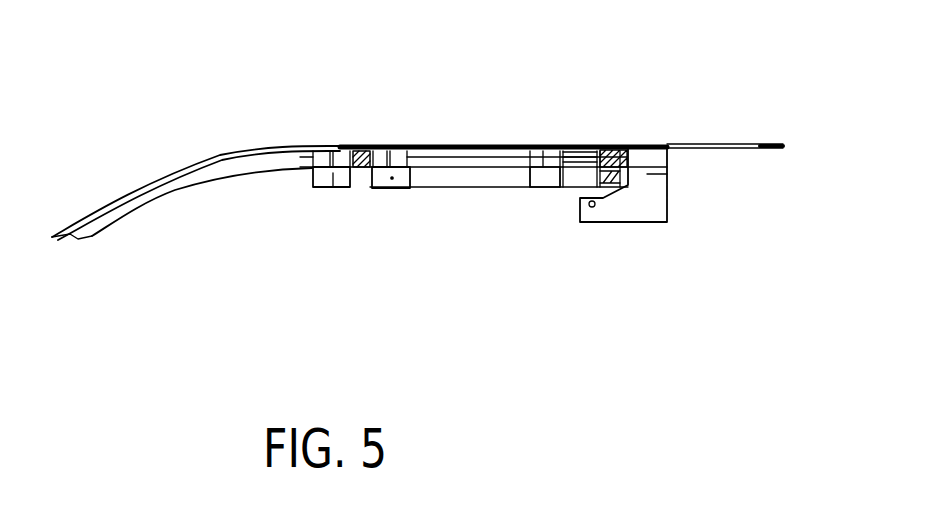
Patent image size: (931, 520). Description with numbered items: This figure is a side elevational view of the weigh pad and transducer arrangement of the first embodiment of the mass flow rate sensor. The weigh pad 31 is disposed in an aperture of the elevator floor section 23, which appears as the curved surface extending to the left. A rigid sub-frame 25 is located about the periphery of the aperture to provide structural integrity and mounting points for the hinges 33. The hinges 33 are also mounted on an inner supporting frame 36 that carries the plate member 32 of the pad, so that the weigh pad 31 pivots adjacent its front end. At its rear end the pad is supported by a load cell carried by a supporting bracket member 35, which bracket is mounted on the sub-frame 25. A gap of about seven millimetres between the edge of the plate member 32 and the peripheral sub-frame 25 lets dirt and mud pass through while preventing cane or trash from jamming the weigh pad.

The elevator floor section 23 is at (217, 148).
The sub-frame 25 is at (332, 188).
The weigh pad 31 is at (490, 265).
The plate member 32 is at (460, 146).
The hinges 33 is at (356, 150).
The supporting bracket member 35 is at (642, 180).
The inner supporting frame 36 is at (525, 167).